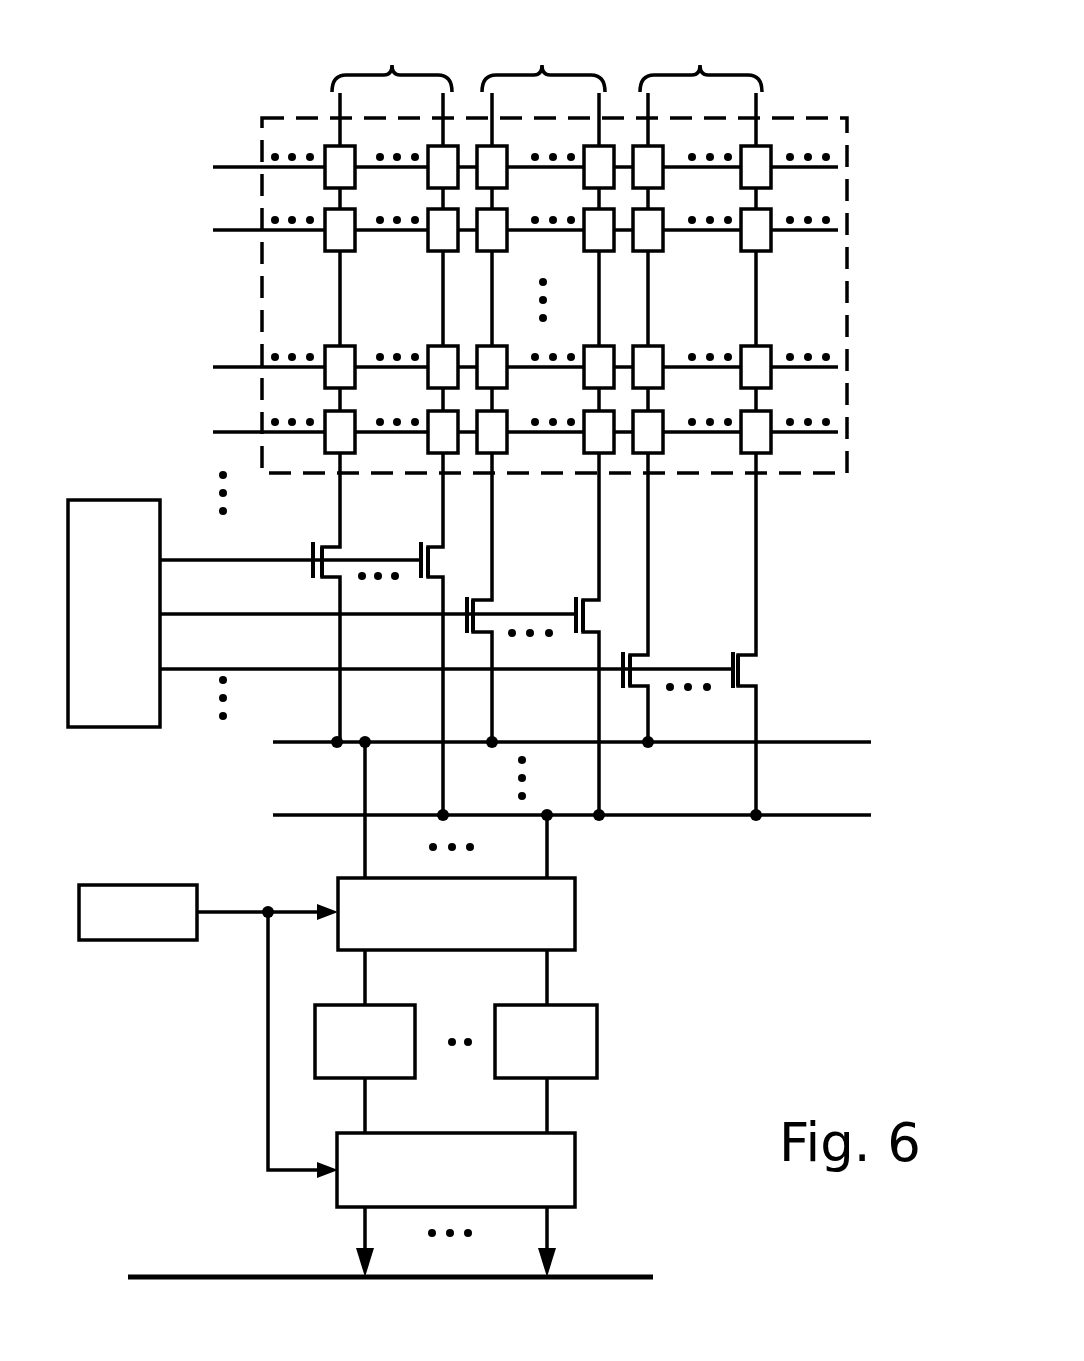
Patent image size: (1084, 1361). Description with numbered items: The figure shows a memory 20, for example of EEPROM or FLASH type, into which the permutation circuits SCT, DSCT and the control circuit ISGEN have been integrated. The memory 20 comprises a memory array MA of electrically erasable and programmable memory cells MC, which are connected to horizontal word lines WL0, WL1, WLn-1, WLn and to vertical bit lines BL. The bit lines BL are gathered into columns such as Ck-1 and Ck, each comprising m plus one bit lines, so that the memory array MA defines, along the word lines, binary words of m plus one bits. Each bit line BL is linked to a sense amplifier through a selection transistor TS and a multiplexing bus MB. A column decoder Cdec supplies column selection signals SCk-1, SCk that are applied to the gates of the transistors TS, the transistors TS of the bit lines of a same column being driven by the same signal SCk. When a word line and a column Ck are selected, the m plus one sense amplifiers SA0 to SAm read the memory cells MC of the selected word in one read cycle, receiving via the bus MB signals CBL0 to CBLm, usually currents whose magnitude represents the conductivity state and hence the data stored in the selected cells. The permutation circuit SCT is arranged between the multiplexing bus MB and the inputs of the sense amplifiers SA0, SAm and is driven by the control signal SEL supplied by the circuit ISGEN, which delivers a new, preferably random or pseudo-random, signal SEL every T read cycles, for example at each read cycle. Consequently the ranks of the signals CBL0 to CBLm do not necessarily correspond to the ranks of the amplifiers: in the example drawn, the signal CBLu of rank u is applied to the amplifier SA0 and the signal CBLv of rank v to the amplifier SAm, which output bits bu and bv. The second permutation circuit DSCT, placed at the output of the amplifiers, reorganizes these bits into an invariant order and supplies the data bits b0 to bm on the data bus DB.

The memory 20 is at (273, 65).
The memory array MA is at (846, 116).
The memory cells MC is at (435, 247).
The bit lines BL is at (755, 280).
The word line WL0 is at (490, 165).
The word line WL1 is at (490, 228).
The word line WLn-1 is at (475, 363).
The word line WLn is at (490, 428).
The column Ck-1 is at (392, 57).
The column Ck is at (543, 57).
The column decoder Cdec is at (114, 613).
The column selection signal SCk-1 is at (290, 538).
The column selection signal SCk is at (368, 594).
The selection transistor TS is at (428, 545).
The multiplexing bus MB is at (871, 742).
The signal CBL0 is at (327, 810).
The signal CBLm is at (590, 846).
The permutation circuit SCT is at (456, 914).
The control circuit ISGEN is at (138, 912).
The control signal SEL is at (245, 900).
The signal CBLu is at (402, 977).
The signal CBLv is at (585, 977).
The sense amplifier SA0 is at (365, 1041).
The sense amplifier SAm is at (546, 1041).
The output bit bu is at (384, 1105).
The output bit bv is at (564, 1105).
The second permutation circuit DSCT is at (456, 1170).
The data bit b0 is at (349, 1242).
The data bit bm is at (564, 1242).
The data bus DB is at (185, 1258).